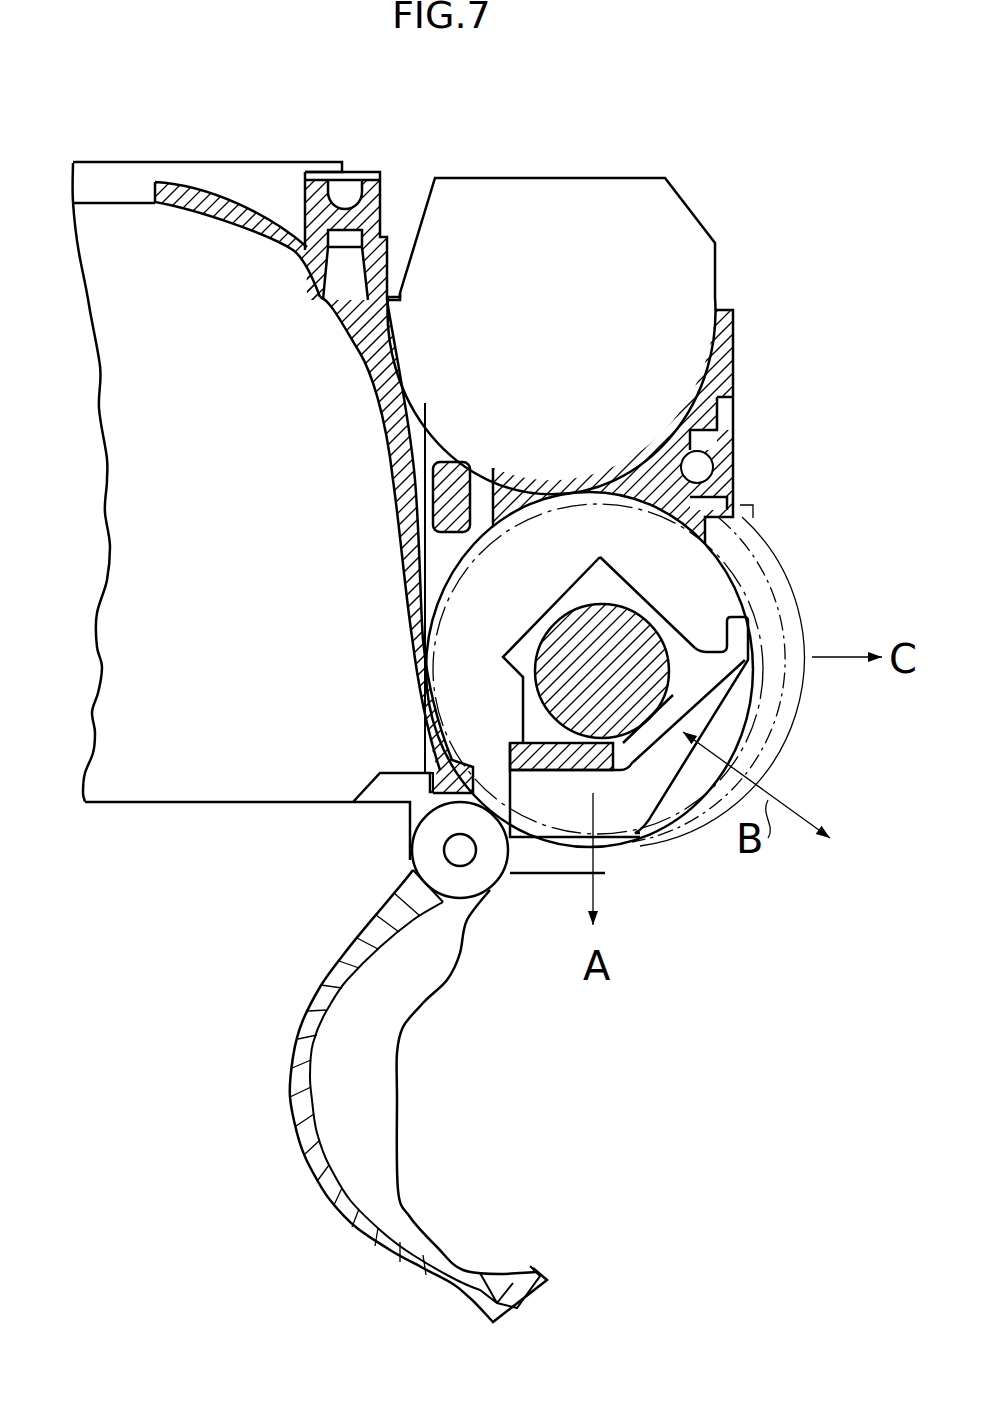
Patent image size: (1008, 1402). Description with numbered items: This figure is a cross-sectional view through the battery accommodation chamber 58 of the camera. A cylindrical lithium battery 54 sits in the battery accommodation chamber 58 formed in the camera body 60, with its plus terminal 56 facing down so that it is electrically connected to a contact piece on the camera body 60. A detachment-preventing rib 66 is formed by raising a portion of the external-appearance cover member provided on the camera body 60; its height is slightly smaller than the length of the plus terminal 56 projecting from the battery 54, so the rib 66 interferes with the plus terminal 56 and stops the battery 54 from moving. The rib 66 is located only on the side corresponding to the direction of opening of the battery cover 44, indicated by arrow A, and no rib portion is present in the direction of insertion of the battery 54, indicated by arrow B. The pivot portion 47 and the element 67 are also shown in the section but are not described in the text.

The battery cover 44 is at (410, 1266).
The roller 47 is at (450, 850).
The battery 54 is at (663, 838).
The plus terminal 56 is at (643, 637).
The battery accommodation chamber 58 is at (448, 600).
The camera body 60 is at (723, 393).
The detachment-preventing rib 66 is at (550, 747).
The holder block 67 is at (650, 767).